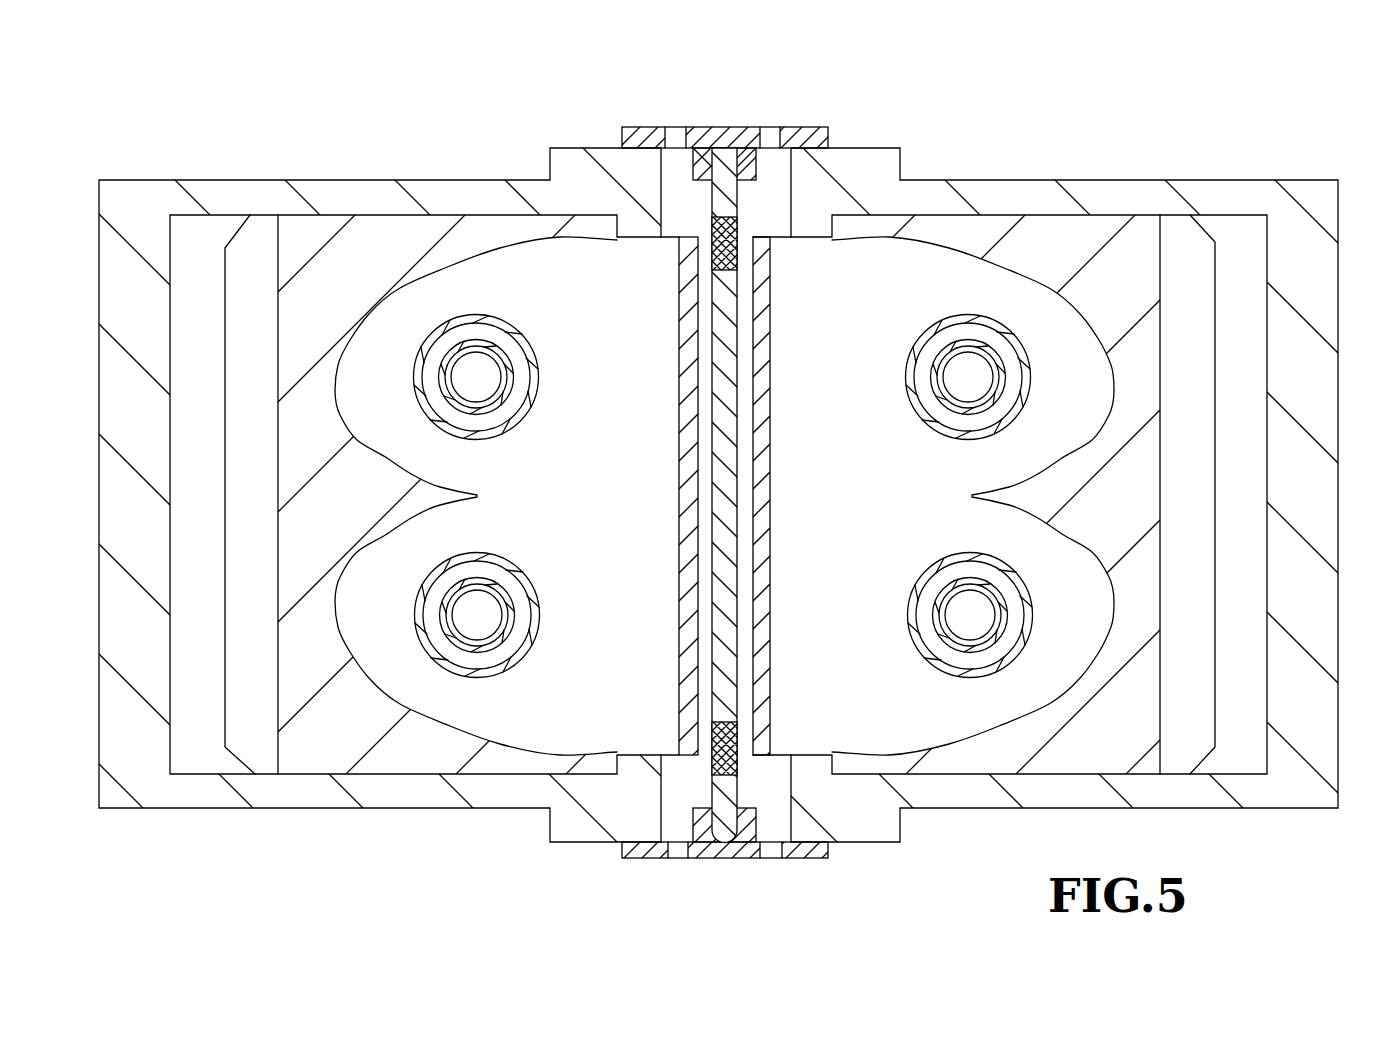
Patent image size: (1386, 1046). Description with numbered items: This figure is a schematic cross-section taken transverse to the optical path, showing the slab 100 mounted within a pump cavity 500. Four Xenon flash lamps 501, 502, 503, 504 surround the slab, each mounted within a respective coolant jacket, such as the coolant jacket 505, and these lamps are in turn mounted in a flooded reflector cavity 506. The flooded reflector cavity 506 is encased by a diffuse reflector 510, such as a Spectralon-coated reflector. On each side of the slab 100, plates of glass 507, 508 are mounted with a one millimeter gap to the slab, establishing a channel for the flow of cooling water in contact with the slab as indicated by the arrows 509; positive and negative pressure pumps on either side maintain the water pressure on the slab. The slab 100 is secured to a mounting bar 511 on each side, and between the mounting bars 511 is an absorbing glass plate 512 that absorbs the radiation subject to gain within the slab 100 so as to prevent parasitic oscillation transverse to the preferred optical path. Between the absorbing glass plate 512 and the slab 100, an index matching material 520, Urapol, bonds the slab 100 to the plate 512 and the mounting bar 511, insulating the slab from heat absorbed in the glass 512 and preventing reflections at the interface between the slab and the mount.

The slab 100 is at (737, 505).
The pump cavity 500 is at (1138, 180).
The lamp 501 is at (960, 585).
The lamp 502 is at (948, 358).
The lamp 503 is at (493, 358).
The lamp 504 is at (503, 638).
The coolant jacket 505 is at (918, 602).
The flooded reflector cavity 506 is at (576, 523).
The glass plate 507 is at (685, 437).
The glass plate 508 is at (772, 440).
The cooling water flow path 509 is at (748, 228).
The diffuse reflector 510 is at (382, 238).
The mounting bar 511 is at (722, 842).
The absorbing glass plate 512 is at (648, 800).
The index matching material 520 is at (758, 755).